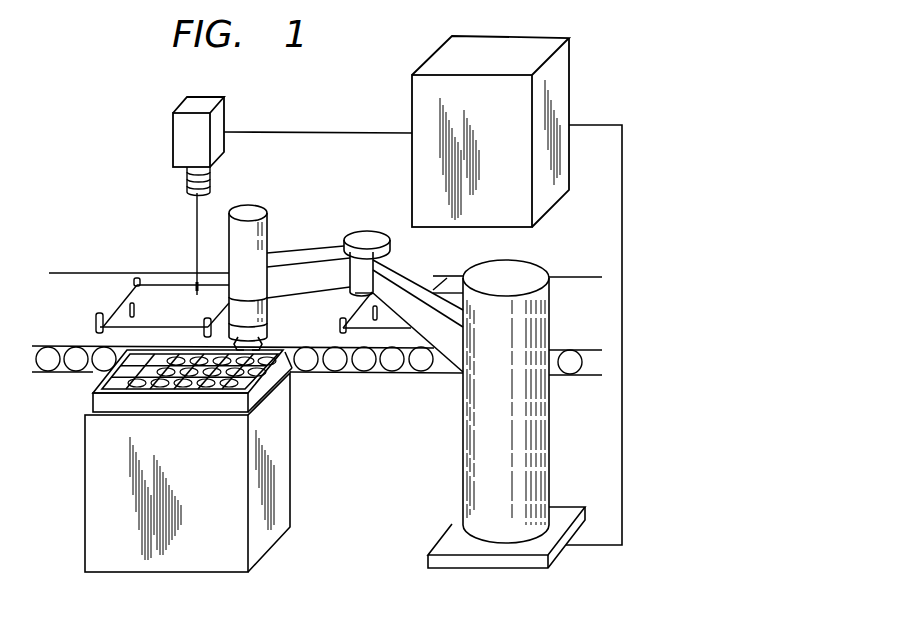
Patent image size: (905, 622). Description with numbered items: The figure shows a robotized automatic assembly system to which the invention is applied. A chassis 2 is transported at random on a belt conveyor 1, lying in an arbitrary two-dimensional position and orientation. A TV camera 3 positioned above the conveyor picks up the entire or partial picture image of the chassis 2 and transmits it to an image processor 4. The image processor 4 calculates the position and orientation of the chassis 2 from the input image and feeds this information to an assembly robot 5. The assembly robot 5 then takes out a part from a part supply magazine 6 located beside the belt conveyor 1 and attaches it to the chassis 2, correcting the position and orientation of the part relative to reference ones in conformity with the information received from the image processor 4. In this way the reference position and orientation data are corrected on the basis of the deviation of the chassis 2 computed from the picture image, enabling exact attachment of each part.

The belt conveyor 1 is at (72, 288).
The chassis 2 is at (144, 290).
The TV camera 3 is at (175, 140).
The image processor 4 is at (488, 48).
The assembly robot 5 is at (475, 440).
The part supply magazine 6 is at (98, 401).